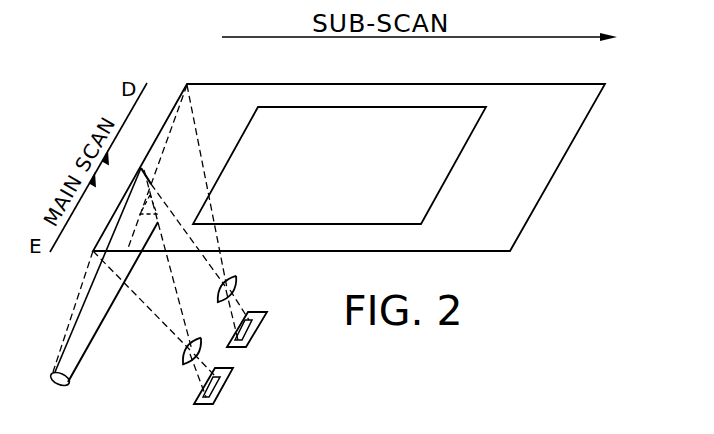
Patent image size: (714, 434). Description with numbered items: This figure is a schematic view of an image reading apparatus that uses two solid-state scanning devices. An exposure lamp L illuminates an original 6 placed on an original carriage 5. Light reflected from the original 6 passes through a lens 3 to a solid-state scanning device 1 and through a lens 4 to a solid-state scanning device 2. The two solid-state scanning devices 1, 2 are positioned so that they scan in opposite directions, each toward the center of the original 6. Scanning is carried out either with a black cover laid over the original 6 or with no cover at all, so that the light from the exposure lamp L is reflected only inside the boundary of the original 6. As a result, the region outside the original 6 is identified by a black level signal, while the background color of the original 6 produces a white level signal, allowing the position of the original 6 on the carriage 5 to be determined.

The solid-state scanning device 1 is at (253, 333).
The solid-state scanning device 2 is at (222, 389).
The lens 3 is at (238, 275).
The lens 4 is at (183, 354).
The original carriage 5 is at (562, 134).
The original 6 is at (421, 110).
The exposure lamp L is at (80, 367).